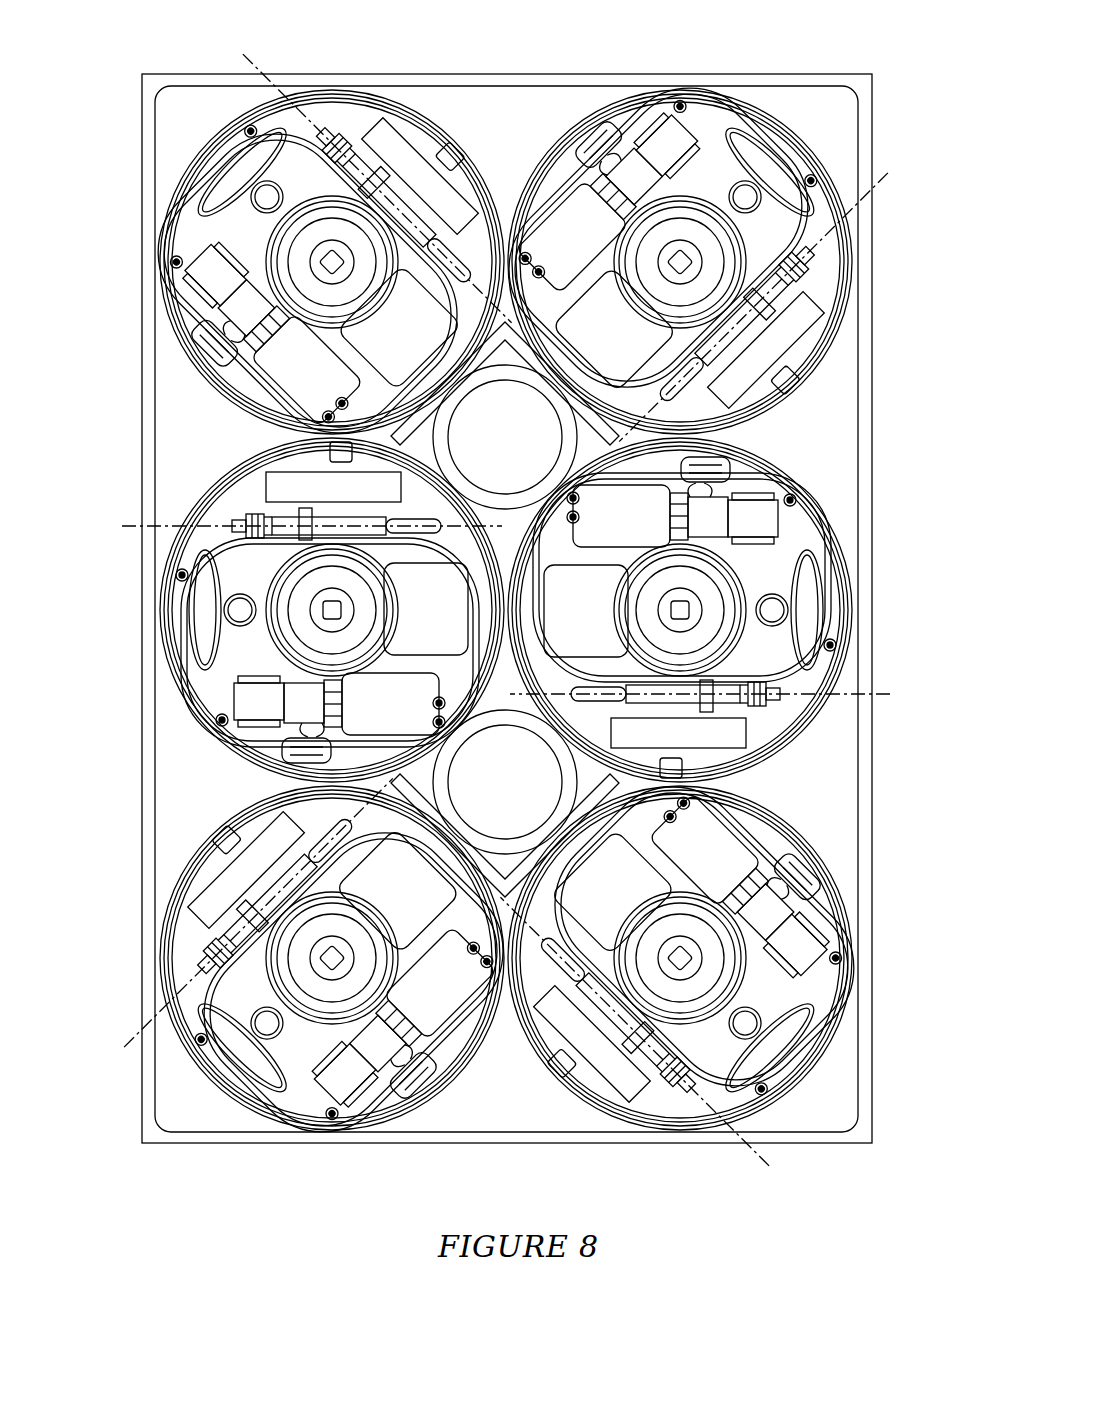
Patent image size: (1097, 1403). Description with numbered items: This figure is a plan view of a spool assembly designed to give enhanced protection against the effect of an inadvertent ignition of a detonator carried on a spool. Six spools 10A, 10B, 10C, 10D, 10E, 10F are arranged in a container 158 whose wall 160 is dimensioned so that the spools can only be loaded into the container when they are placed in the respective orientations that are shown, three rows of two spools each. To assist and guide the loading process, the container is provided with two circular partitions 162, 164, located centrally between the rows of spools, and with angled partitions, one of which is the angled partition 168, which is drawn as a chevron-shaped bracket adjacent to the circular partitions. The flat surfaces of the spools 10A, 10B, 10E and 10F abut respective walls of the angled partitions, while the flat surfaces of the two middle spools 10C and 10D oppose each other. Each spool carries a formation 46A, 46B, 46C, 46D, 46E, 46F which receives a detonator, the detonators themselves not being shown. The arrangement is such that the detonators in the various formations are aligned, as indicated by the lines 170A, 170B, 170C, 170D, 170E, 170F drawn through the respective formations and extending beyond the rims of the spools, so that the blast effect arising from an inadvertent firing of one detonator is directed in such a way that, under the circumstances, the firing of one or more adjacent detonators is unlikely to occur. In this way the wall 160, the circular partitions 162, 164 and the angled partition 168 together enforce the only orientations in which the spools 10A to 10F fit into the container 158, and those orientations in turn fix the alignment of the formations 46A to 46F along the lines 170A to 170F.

The spool 10A is at (247, 110).
The spool 10B is at (783, 120).
The spool 10C is at (178, 722).
The spool 10D is at (820, 713).
The spool 10E is at (187, 1060).
The spool 10F is at (822, 1057).
The formation 46A is at (346, 150).
The formation 46B is at (797, 278).
The formation 46C is at (333, 520).
The formation 46D is at (712, 700).
The formation 46E is at (250, 913).
The formation 46F is at (615, 1032).
The line 170A is at (375, 185).
The line 170B is at (740, 325).
The line 170C is at (232, 520).
The line 170D is at (717, 698).
The line 170E is at (207, 927).
The line 170F is at (652, 1062).
The container 158 is at (253, 1166).
The wall 160 is at (820, 1145).
The circular partition 162 is at (475, 385).
The circular partition 164 is at (475, 733).
The angled partition 168 is at (400, 395).